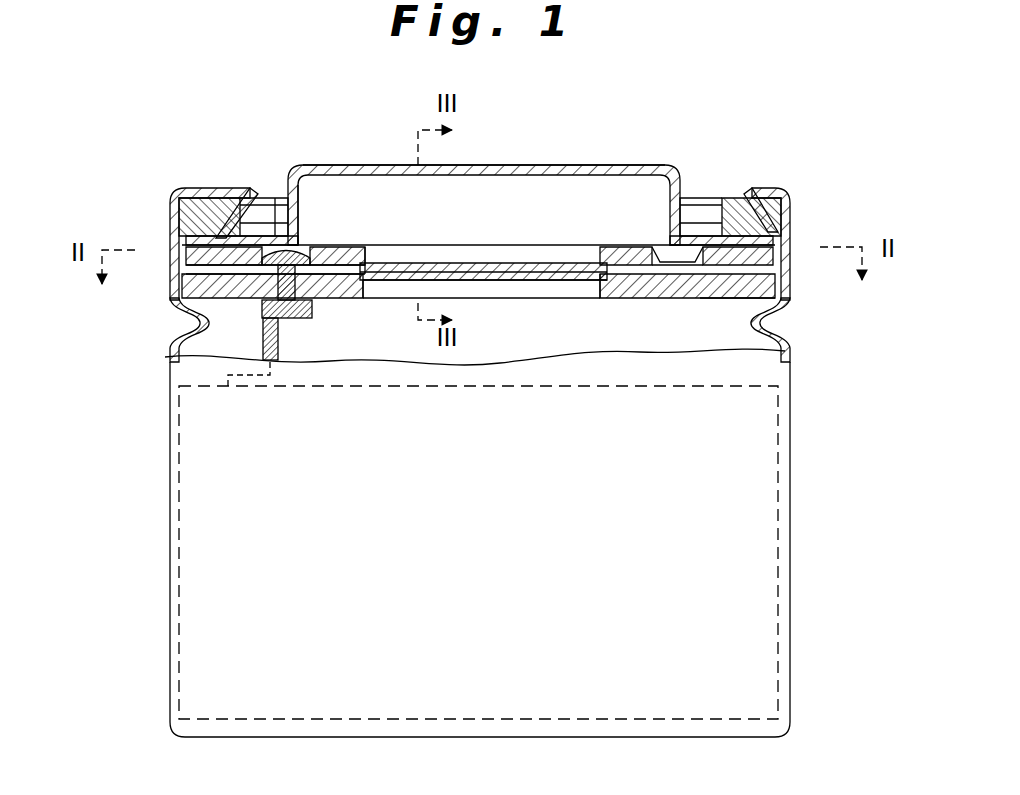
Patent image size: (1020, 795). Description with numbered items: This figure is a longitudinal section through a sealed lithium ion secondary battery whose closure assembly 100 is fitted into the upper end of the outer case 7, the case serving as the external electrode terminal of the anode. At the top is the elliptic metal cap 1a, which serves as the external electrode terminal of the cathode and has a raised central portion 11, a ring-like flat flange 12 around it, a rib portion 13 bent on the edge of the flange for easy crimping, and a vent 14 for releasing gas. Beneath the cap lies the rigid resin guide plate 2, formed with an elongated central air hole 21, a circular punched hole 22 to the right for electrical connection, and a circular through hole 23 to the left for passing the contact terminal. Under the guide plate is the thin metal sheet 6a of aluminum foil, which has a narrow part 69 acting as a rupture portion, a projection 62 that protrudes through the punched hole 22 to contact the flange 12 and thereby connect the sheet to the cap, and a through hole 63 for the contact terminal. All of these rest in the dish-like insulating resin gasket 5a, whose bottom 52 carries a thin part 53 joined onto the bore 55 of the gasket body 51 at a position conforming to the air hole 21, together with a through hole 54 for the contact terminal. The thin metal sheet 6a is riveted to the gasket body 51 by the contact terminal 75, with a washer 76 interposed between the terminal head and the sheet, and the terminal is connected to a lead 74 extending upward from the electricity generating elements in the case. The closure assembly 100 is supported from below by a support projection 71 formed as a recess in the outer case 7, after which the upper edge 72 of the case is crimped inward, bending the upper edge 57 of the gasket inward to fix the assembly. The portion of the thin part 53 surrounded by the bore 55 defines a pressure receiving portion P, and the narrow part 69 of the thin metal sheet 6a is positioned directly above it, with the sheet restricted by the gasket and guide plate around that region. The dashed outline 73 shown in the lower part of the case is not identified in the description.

The closure assembly 100 is at (502, 311).
The metal cap 1a is at (598, 164).
The raised central portion 11 is at (352, 165).
The vent 14 is at (300, 207).
The circular through hole 23 is at (275, 198).
The resin guide plate 2 is at (374, 243).
The air hole 21 is at (388, 265).
The narrow part 69 is at (446, 259).
The thin metal sheet 6a is at (557, 255).
The punched hole 22 is at (650, 252).
The contact terminal 75 is at (303, 247).
The upper edge of insulating resin gasket 57 is at (784, 190).
The flange 12 is at (716, 198).
The rib portion 13 is at (789, 194).
The upper edge of outer case 72 is at (800, 214).
The washer 76 is at (178, 298).
The support projection 71 is at (770, 315).
The bottom 52 is at (334, 300).
The thin part 53 is at (535, 300).
The gasket body 51 is at (626, 300).
The bore 55 is at (375, 287).
The projection 62 is at (674, 252).
The insulating resin gasket 5a is at (733, 300).
The through hole 54 is at (302, 320).
The through hole 63 is at (262, 320).
The lead 74 is at (266, 340).
The pressure receiving portion P is at (484, 286).
The outer case 7 is at (792, 470).
The electrode assembly 73 is at (172, 563).